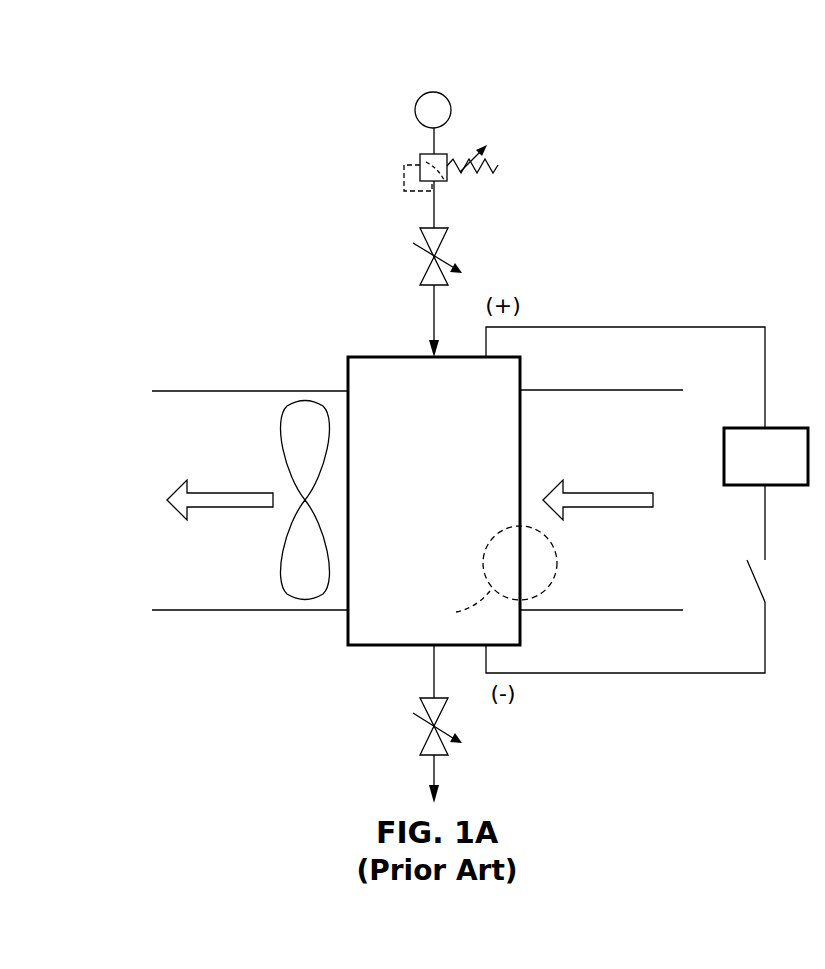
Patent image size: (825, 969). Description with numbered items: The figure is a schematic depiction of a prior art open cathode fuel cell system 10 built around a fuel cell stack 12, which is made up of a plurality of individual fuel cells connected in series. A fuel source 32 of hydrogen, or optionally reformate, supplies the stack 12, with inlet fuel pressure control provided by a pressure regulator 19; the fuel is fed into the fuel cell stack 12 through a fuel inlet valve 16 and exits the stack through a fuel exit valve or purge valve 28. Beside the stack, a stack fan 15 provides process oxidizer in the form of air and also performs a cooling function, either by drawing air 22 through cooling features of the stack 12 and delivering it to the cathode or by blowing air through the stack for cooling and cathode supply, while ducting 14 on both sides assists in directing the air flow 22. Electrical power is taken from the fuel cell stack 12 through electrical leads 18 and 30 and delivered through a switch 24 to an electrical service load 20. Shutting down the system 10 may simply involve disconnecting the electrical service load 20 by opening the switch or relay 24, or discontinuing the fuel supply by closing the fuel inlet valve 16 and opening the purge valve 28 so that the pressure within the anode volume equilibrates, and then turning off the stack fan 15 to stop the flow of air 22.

The fuel cell system 10 is at (103, 62).
The fuel cell stack 12 is at (372, 356).
The ducting 14 is at (252, 390).
The stack fan 15 is at (290, 566).
The fuel inlet valve 16 is at (443, 237).
The electrical lead 18 is at (641, 326).
The pressure regulator 19 is at (445, 181).
The electrical service load 20 is at (724, 443).
The air flow 22 is at (213, 492).
The switch 24 is at (751, 581).
The purge valve 28 is at (440, 757).
The electrical lead 30 is at (682, 674).
The fuel source 32 is at (452, 107).